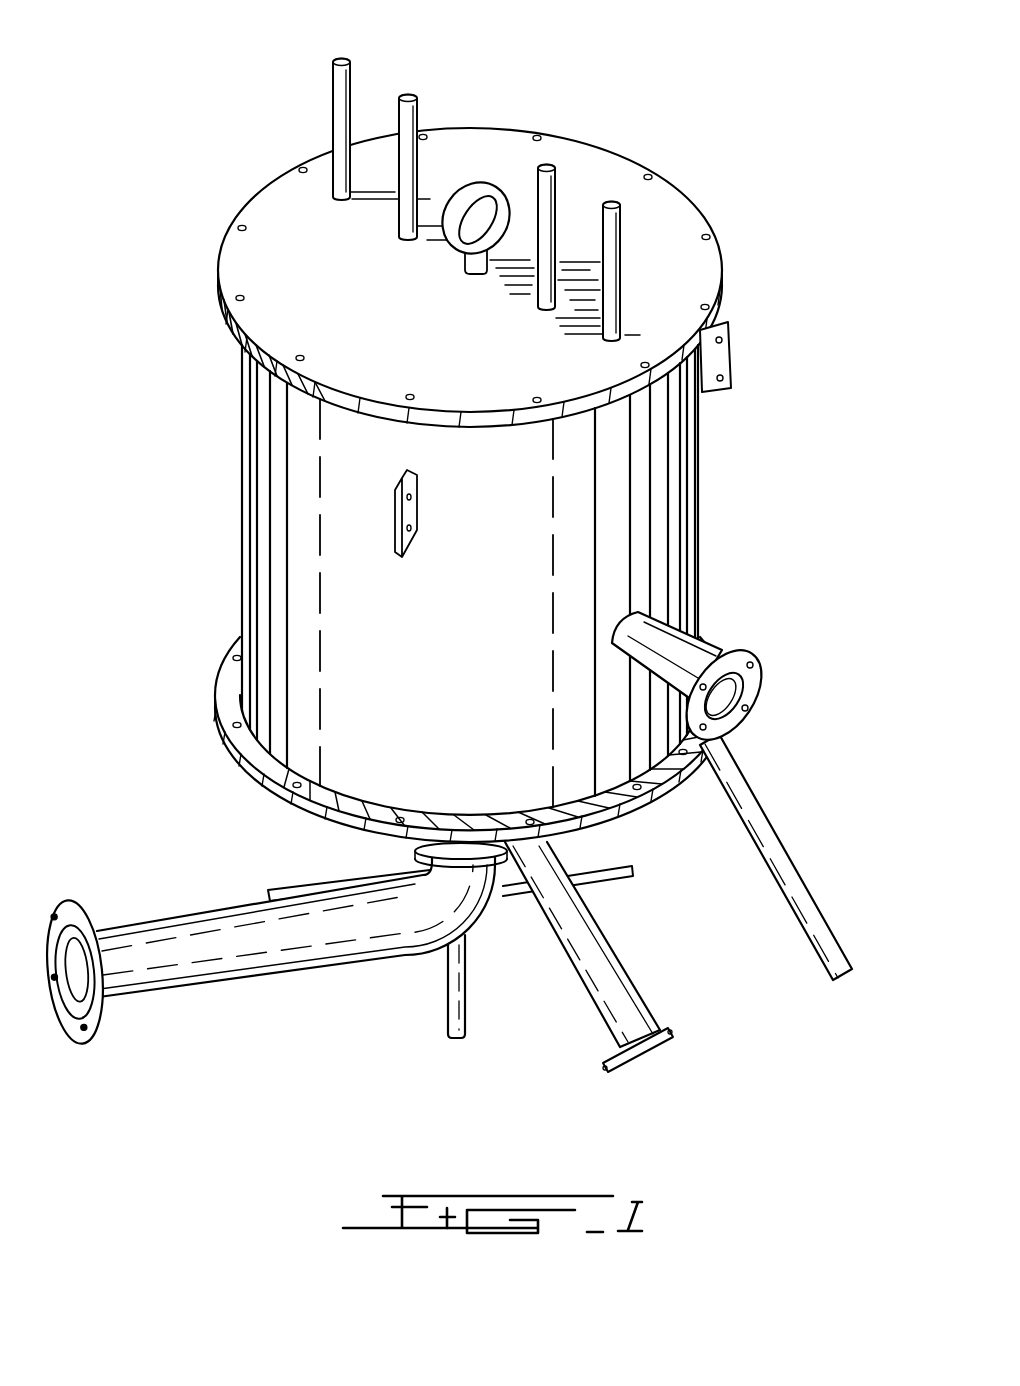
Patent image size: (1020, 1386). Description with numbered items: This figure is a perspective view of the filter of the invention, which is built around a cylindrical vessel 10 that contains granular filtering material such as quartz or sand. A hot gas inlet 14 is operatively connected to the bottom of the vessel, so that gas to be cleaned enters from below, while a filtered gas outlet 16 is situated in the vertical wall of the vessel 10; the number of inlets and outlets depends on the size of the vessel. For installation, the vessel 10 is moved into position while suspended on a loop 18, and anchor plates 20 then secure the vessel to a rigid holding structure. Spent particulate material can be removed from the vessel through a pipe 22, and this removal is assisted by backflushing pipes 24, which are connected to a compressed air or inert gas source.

The cylindrical vessel 10 is at (697, 534).
The hot gas inlet 14 is at (250, 957).
The filtered gas outlet 16 is at (757, 670).
The loop 18 is at (478, 188).
The anchor plates 20 is at (720, 355).
The pipe 22 is at (613, 970).
The backflushing pipes 24 is at (555, 172).